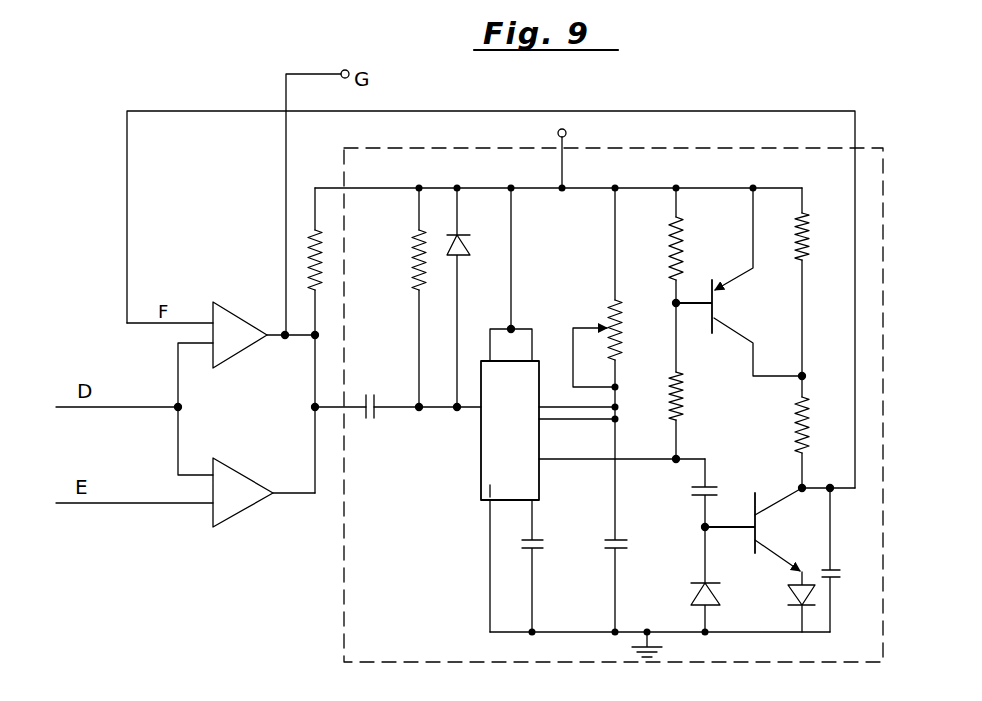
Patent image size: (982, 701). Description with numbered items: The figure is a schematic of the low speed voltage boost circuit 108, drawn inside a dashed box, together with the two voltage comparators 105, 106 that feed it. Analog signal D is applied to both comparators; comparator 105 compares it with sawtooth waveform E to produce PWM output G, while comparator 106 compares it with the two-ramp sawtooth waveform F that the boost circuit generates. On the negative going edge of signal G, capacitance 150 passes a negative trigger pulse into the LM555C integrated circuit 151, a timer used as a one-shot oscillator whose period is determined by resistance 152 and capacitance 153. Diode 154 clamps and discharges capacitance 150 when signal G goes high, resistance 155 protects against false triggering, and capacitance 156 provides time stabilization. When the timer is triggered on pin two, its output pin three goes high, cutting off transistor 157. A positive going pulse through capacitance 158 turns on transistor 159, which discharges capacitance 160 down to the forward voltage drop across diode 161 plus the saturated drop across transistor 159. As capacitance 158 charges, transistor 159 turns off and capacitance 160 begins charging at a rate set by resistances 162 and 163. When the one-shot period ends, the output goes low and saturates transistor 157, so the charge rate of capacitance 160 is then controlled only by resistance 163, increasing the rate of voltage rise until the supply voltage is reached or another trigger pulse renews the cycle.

The voltage comparator 105 is at (235, 480).
The voltage comparator 106 is at (235, 325).
The low speed voltage boost circuit 108 is at (669, 105).
The capacitance 150 is at (375, 392).
The LM555C integrated circuit 151 is at (480, 493).
The resistance 152 is at (631, 320).
The capacitance 153 is at (628, 538).
The diode 154 is at (488, 226).
The resistance 155 is at (413, 258).
The capacitance 156 is at (543, 538).
The transistor 157 is at (718, 302).
The capacitance 158 is at (717, 490).
The transistor 159 is at (762, 528).
The capacitance 160 is at (837, 575).
The diode 161 is at (792, 597).
The resistance 162 is at (808, 243).
The resistance 163 is at (813, 430).